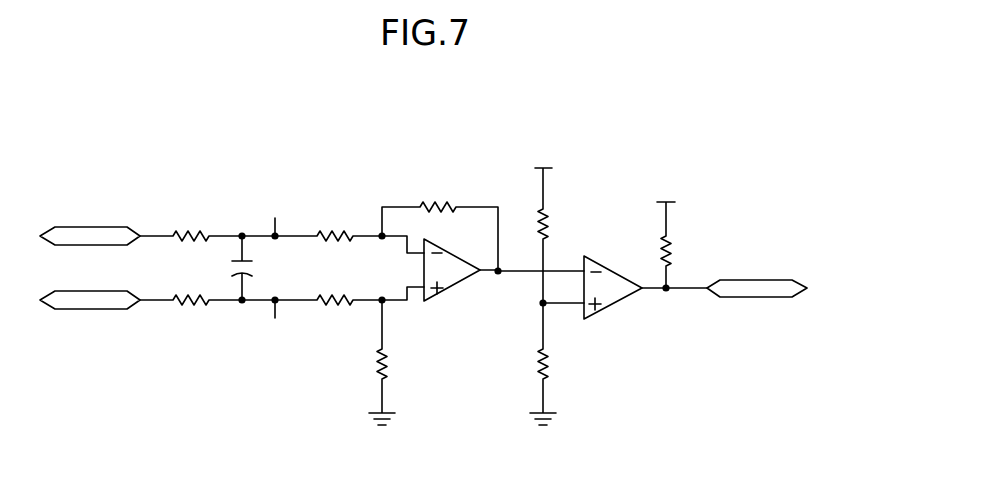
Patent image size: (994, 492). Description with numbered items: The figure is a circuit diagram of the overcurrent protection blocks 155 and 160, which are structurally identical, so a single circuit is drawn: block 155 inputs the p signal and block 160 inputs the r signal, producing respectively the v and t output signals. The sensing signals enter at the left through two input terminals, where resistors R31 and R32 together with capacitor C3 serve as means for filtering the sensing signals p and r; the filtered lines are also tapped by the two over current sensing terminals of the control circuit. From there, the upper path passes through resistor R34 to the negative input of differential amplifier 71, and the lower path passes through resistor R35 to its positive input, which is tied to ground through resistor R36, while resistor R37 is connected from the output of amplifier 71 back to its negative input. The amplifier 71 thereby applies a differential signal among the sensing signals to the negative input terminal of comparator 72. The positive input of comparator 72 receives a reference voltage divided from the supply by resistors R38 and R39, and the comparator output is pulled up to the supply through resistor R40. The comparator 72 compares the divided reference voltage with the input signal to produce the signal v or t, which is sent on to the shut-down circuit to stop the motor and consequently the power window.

The overcurrent protection circuit block 155 is at (104, 107).
The overcurrent protection circuit block 160 is at (162, 107).
The differential amplifier 71 is at (452, 285).
The comparator 72 is at (613, 304).
The resistor R31 is at (191, 224).
The resistor R32 is at (191, 313).
The resistor R34 is at (328, 226).
The resistor R35 is at (328, 313).
The resistor R36 is at (360, 362).
The feedback resistor R37 is at (440, 226).
The resistor R38 is at (563, 235).
The resistor R39 is at (523, 364).
The pull-up resistor R40 is at (686, 245).
The capacitor C3 is at (260, 268).